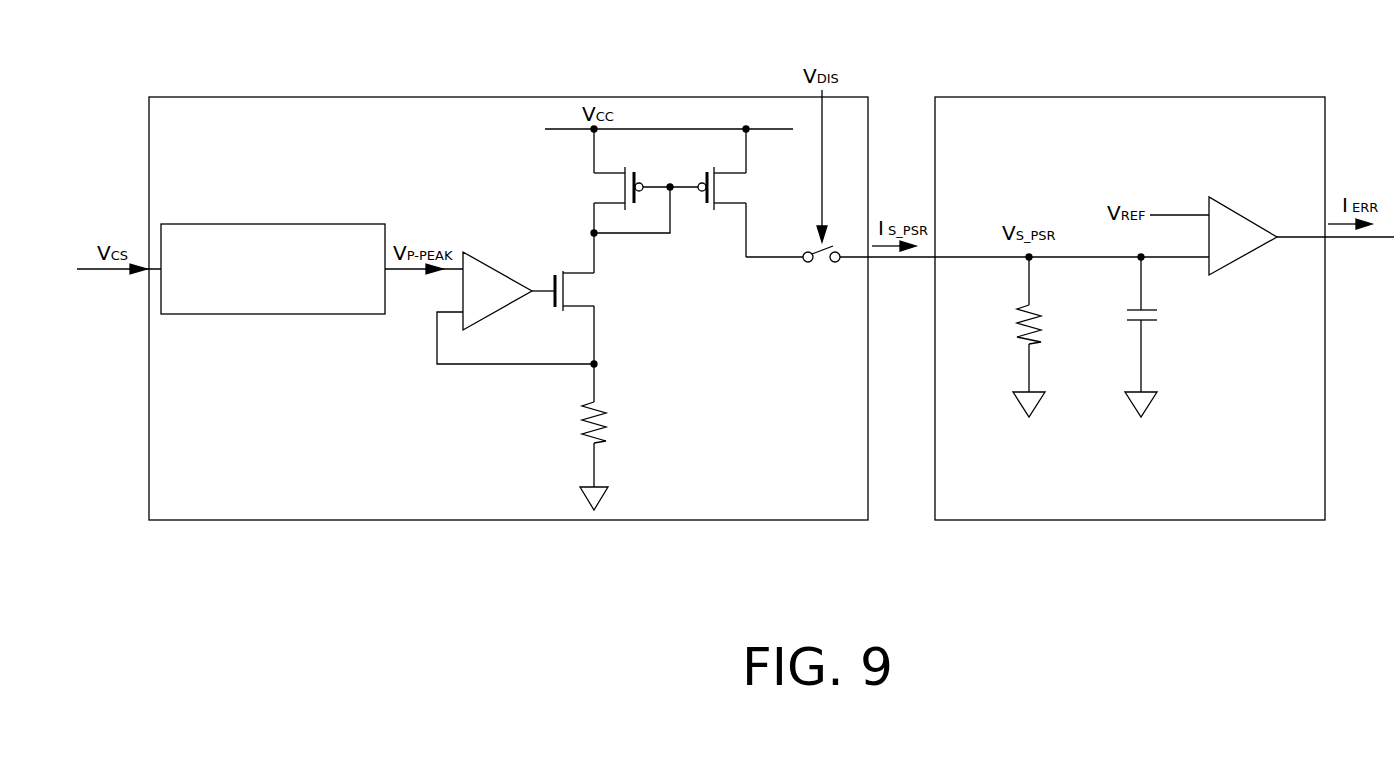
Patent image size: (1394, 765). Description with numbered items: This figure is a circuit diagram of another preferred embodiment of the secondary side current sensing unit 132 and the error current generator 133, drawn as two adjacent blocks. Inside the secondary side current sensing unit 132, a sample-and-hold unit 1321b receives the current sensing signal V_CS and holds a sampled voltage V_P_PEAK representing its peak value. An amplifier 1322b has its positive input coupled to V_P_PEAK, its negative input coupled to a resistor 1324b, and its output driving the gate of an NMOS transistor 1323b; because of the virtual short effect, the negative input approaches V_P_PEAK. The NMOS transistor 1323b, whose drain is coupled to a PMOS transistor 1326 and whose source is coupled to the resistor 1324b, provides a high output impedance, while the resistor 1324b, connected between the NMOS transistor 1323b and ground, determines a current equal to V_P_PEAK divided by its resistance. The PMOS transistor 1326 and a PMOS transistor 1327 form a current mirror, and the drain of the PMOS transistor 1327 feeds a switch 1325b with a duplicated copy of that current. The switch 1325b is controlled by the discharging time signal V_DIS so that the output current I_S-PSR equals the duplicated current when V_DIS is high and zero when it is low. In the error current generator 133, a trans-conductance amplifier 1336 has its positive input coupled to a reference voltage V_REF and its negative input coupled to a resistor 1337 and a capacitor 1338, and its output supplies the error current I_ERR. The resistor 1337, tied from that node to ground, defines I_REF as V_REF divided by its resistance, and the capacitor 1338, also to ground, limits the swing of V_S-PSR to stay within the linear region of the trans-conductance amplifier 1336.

The secondary side current sensing unit 132 is at (473, 96).
The error current generator 133 is at (1192, 96).
The sample-and-hold unit 1321b is at (293, 224).
The amplifier 1322b is at (497, 268).
The NMOS transistor 1323b is at (587, 288).
The resistor 1324b is at (602, 412).
The switch 1325b is at (823, 263).
The PMOS transistor 1326 is at (605, 189).
The PMOS transistor 1327 is at (797, 177).
The trans-conductance amplifier 1336 is at (1240, 212).
The resistor 1337 is at (1012, 337).
The capacitor 1338 is at (1160, 315).